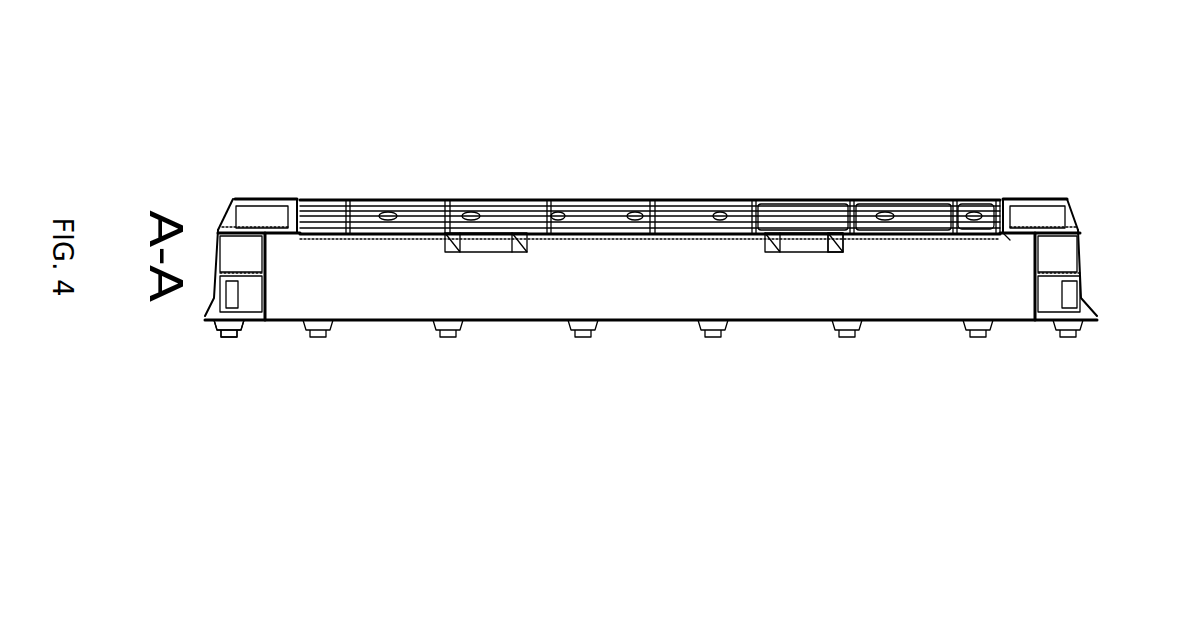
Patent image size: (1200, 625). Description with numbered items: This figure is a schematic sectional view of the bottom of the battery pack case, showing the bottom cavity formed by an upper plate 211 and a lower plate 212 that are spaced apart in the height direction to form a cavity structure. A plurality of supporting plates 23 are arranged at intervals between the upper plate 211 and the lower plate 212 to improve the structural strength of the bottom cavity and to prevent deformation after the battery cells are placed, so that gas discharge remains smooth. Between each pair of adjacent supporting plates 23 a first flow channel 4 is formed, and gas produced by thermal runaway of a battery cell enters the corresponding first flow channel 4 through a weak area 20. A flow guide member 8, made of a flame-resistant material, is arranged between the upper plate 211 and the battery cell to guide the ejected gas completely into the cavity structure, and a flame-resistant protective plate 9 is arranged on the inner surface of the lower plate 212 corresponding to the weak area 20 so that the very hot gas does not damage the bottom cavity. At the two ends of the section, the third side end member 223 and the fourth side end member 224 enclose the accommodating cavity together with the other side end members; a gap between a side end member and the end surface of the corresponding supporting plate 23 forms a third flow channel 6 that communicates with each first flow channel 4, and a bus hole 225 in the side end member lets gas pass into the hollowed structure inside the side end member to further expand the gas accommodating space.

The first flow channel 4 is at (687, 199).
The third flow channel 6 is at (300, 238).
The flow guide member 8 is at (838, 242).
The protective plate 9 is at (812, 199).
The weak area 20 is at (490, 252).
The supporting plate 23 is at (650, 199).
The upper plate 211 is at (907, 235).
The lower plate 212 is at (910, 199).
The third side end member 223 is at (1082, 248).
The fourth side end member 224 is at (232, 337).
The bus hole 225 is at (972, 199).